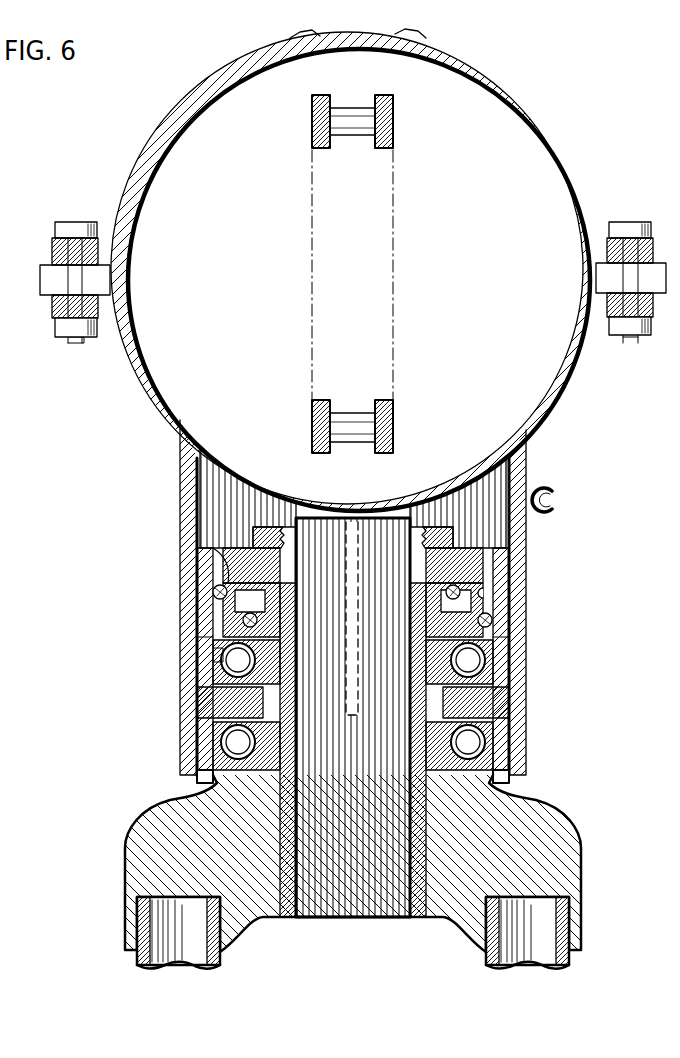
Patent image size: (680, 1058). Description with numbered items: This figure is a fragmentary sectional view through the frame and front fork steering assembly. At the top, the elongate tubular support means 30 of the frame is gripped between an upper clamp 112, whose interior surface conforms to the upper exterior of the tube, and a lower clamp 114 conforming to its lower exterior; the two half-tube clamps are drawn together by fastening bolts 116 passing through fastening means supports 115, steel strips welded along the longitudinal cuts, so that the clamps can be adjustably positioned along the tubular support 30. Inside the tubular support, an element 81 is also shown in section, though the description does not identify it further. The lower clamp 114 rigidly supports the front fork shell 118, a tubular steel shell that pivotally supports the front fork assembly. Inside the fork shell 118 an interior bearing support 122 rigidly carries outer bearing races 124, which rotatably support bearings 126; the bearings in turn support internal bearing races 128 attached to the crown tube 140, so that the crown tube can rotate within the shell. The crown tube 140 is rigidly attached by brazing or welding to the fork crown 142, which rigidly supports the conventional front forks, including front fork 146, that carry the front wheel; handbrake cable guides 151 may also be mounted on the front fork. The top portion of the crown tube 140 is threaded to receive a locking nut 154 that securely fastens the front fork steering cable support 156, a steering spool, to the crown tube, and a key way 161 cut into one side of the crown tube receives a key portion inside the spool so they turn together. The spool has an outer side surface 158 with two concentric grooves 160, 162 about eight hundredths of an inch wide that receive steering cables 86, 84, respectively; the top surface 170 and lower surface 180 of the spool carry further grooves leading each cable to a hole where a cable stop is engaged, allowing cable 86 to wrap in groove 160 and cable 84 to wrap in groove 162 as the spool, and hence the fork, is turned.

The elongate tubular support means 30 is at (145, 170).
The upper clamp 112 is at (163, 118).
The lower clamp 114 is at (600, 338).
The fastening bolts 116 is at (68, 224).
The fastening means supports 115 is at (55, 262).
The roller 81 is at (394, 114).
The front fork shell 118 is at (182, 468).
The locking nut 154 is at (432, 528).
The crown tube 140 is at (376, 786).
The key way 161 is at (350, 525).
The steering cable 86 is at (225, 565).
The steering cable 84 is at (222, 665).
The front fork steering cable support 156 is at (216, 588).
The outer side surface 158 is at (246, 620).
The groove 160 is at (499, 597).
The top surface 170 is at (220, 555).
The outer bearing races 124 is at (212, 738).
The interior bearing support 122 is at (205, 702).
The bearings 126 is at (222, 748).
The internal bearing races 128 is at (200, 778).
The groove 162 is at (196, 626).
The lower surface 180 is at (210, 655).
The fork crown 142 is at (190, 822).
The front fork 146 is at (148, 905).
The handbrake cable guides 151 is at (552, 490).